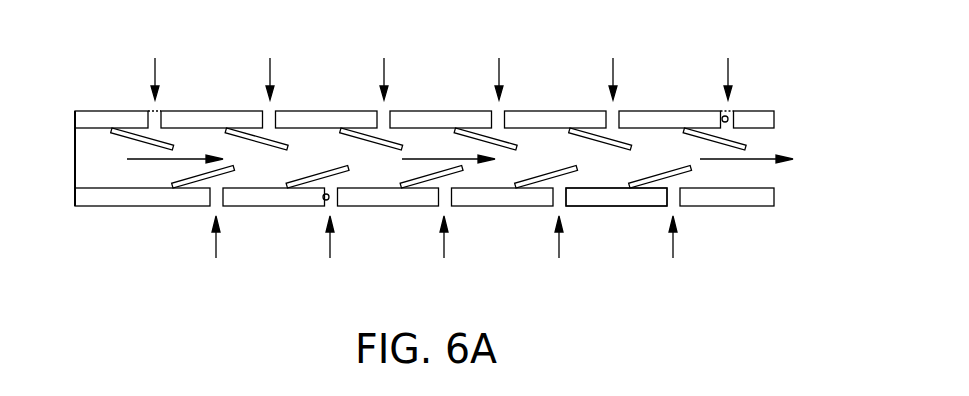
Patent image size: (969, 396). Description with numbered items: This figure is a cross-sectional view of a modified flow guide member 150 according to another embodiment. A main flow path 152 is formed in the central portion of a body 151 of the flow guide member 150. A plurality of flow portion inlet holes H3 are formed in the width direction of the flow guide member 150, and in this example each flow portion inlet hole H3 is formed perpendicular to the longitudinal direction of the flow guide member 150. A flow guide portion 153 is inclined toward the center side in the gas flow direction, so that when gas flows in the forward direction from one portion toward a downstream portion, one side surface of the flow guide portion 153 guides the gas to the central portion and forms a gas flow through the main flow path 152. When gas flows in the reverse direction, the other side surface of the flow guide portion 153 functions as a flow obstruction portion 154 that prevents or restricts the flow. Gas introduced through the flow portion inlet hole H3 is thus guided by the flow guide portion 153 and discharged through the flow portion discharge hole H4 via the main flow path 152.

The flow guide member 150 is at (99, 63).
The body 151 is at (102, 197).
The main flow path 152 is at (314, 143).
The flow guide portion 153 is at (543, 177).
The flow obstruction portion 154 is at (568, 180).
The flow portion inlet hole H3 is at (723, 119).
The flow portion discharge hole H4 is at (741, 182).